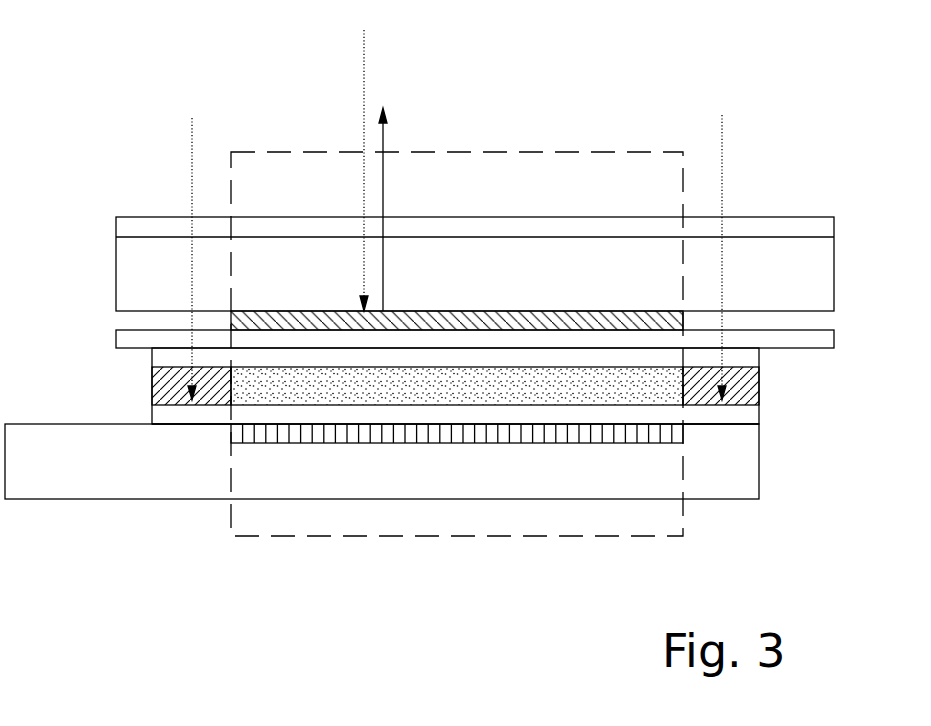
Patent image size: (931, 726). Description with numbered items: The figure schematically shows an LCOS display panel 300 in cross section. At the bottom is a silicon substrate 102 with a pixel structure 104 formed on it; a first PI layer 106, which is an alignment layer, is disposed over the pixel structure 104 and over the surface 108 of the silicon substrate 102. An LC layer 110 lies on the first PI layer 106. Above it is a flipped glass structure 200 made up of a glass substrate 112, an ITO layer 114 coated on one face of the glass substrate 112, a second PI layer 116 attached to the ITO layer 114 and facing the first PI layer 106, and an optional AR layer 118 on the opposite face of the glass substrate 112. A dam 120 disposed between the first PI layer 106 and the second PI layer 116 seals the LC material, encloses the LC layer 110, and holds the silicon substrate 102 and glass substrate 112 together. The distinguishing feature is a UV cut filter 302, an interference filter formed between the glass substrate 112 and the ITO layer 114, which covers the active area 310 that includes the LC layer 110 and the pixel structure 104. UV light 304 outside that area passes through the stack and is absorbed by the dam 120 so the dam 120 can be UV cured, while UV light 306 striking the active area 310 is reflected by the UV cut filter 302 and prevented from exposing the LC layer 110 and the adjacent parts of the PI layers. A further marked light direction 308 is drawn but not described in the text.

The silicon substrate 102 is at (83, 481).
The pixel structure 104 is at (532, 443).
The first PI layer 106 is at (760, 412).
The surface 108 is at (207, 424).
The LC layer 110 is at (623, 397).
The glass substrate 112 is at (293, 294).
The ITO layer 114 is at (836, 338).
The second PI layer 116 is at (415, 349).
The AR layer 118 is at (834, 228).
The dam 120 is at (153, 395).
The glass structure 200 is at (274, 210).
The LCOS display panel 300 is at (212, 55).
The UV cut filter 302 is at (647, 311).
The UV light 304 is at (192, 155).
The UV light 306 is at (364, 67).
The direction of reaction 308 is at (383, 135).
The active area 310 is at (288, 536).